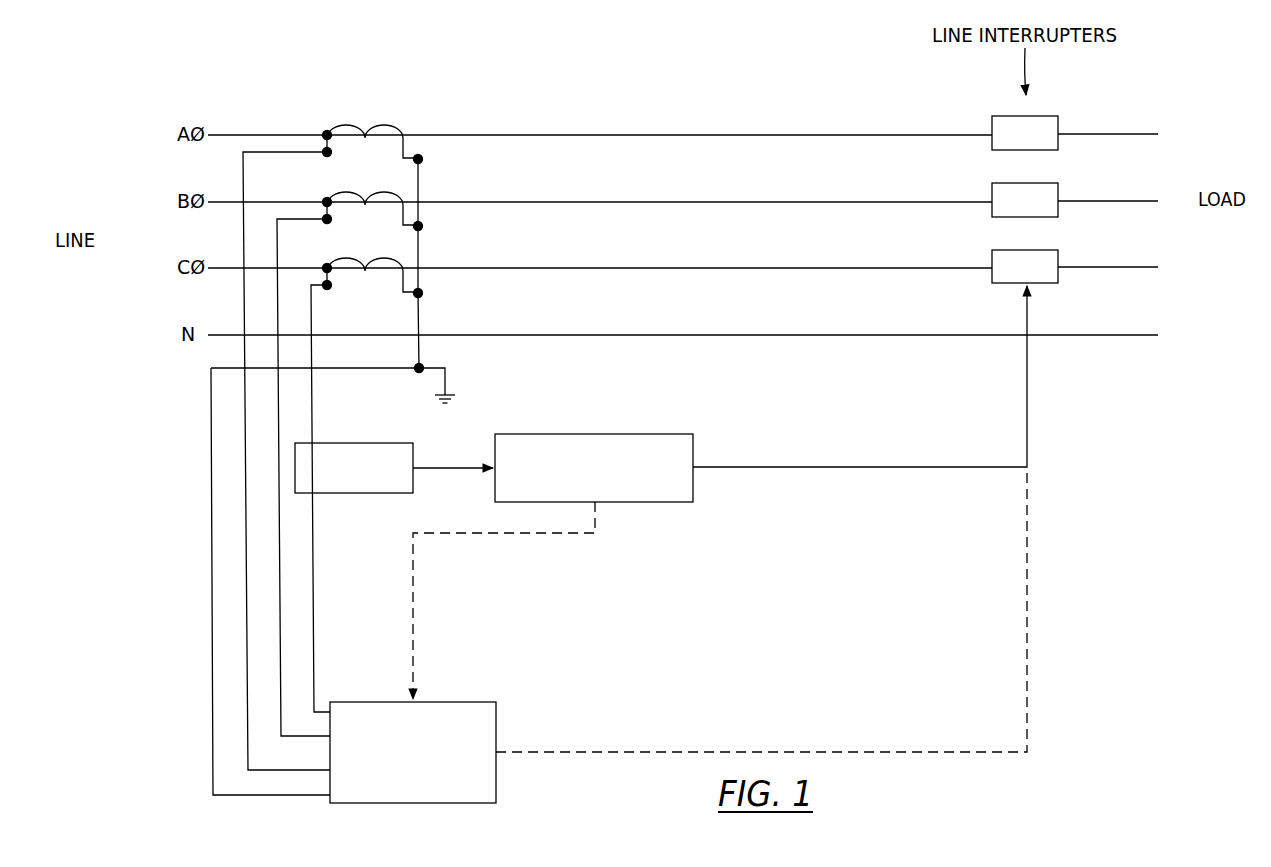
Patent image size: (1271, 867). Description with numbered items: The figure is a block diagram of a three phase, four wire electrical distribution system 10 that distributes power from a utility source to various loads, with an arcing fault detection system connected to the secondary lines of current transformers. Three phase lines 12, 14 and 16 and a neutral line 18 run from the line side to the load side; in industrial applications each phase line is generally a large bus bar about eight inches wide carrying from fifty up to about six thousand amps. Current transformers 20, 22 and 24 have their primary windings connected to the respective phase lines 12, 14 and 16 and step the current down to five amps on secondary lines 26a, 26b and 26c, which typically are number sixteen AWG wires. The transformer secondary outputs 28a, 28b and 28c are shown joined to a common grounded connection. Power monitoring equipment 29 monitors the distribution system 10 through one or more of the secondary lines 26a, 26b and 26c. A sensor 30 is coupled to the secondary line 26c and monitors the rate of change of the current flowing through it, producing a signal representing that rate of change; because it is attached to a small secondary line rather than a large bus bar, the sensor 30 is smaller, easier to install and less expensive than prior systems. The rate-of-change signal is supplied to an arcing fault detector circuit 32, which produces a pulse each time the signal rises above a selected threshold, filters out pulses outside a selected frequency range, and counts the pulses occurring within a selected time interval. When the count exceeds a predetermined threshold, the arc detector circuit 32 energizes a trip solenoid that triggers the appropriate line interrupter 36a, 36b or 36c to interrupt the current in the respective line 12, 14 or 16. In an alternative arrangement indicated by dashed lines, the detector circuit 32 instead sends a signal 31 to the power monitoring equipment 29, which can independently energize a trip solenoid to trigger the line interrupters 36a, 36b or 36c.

The electrical distribution system 10 is at (572, 113).
The phase line 12 is at (225, 128).
The phase line 14 is at (225, 195).
The phase line 16 is at (225, 262).
The neutral line 18 is at (225, 328).
The current transformer 20 is at (349, 123).
The current transformer 22 is at (385, 190).
The current transformer 24 is at (386, 256).
The secondary line 26a is at (245, 401).
The secondary line 26b is at (279, 434).
The secondary line 26c is at (312, 468).
The current transformer secondary output 28a is at (420, 181).
The current transformer secondary output 28b is at (420, 250).
The current transformer secondary output 28c is at (420, 317).
The power monitoring equipment 29 is at (477, 700).
The sensor 30 is at (364, 479).
The signal 31 is at (564, 547).
The arcing fault detector circuit 32 is at (595, 432).
The line interrupter 36a is at (1025, 133).
The line interrupter 36b is at (1025, 200).
The line interrupter 36c is at (1025, 266).